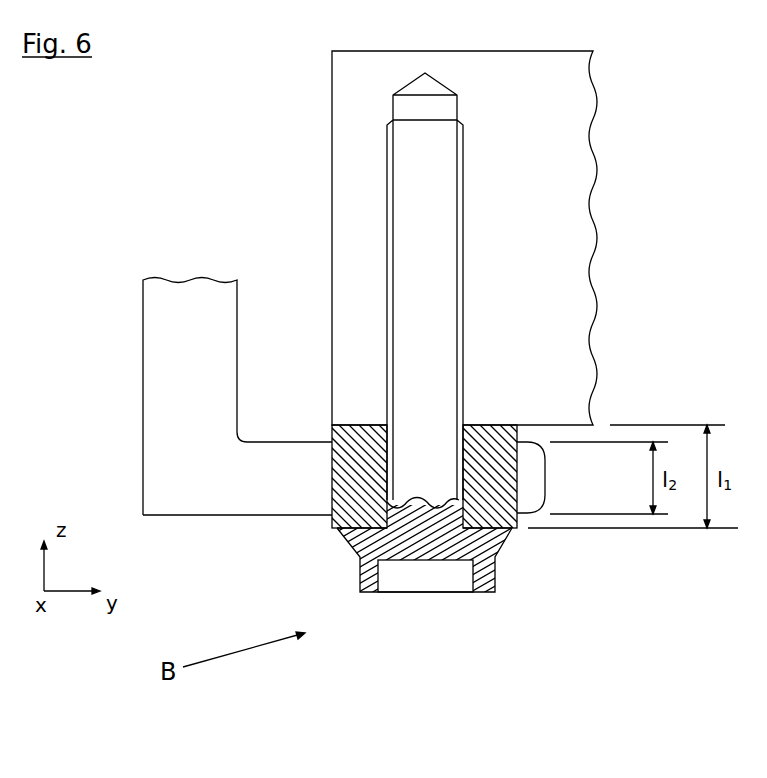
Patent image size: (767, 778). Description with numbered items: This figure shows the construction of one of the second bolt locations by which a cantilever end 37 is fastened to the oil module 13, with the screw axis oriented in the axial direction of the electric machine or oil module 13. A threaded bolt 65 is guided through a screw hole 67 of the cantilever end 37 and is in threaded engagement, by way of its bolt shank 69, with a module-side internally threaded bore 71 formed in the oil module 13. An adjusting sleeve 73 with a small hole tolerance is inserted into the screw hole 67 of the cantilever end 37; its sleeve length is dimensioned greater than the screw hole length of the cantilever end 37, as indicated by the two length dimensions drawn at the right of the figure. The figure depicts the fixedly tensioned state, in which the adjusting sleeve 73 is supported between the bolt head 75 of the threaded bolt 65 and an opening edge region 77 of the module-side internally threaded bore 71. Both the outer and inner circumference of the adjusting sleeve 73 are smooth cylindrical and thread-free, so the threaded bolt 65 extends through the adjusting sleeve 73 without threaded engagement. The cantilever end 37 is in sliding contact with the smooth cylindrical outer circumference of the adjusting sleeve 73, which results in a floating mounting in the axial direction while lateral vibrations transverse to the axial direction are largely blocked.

The oil module 13 is at (540, 200).
The cantilever end 37 is at (143, 428).
The threaded bolt 65 is at (435, 614).
The screw hole 67 is at (518, 475).
The bolt shank 69 is at (428, 485).
The module-side internally threaded bore 71 is at (387, 185).
The adjusting sleeve 73 is at (353, 490).
The bolt head 75 is at (490, 545).
The opening edge region 77 is at (495, 425).